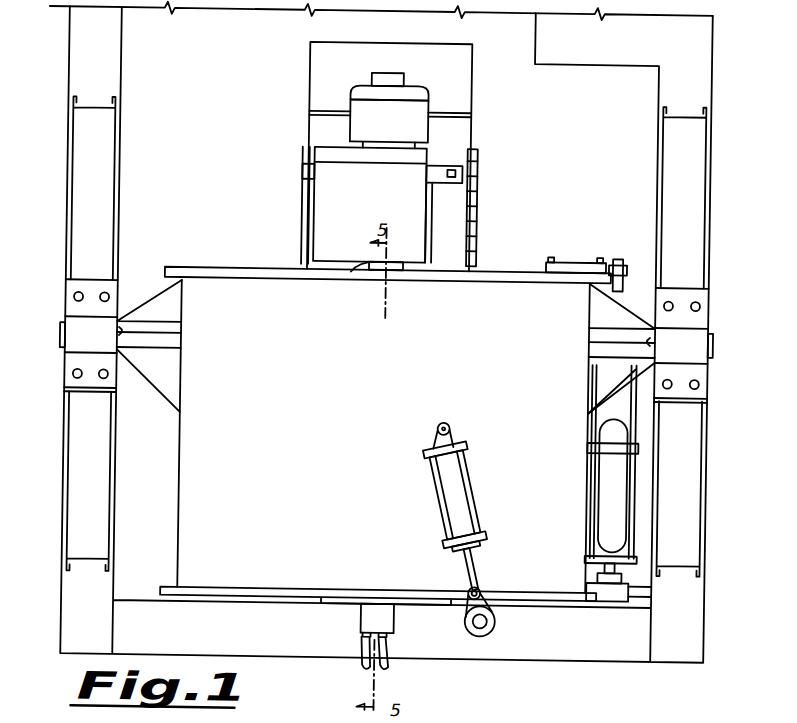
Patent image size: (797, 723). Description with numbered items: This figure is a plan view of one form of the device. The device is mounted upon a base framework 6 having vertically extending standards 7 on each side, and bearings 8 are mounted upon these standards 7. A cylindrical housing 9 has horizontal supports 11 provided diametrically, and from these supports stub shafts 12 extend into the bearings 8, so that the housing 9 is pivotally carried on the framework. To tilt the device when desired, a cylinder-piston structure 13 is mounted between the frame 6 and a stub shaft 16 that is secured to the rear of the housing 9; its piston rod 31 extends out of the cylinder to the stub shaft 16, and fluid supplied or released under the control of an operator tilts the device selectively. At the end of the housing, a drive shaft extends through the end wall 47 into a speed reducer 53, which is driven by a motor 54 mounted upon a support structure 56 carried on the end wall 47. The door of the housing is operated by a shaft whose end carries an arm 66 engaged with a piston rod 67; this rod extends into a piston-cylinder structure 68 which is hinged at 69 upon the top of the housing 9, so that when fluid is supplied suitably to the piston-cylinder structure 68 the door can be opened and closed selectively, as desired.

The base framework 6 is at (718, 200).
The standards 7 is at (710, 263).
The bearings 8 is at (694, 337).
The cylindrical housing 9 is at (205, 491).
The horizontal supports 11 is at (610, 332).
The stub shafts 12 is at (714, 350).
The cylinder-piston structure 13 is at (639, 472).
The stub shaft 16 is at (612, 258).
The piston rod 31 is at (622, 289).
The end wall 47 is at (362, 270).
The speed reducer 53 is at (333, 194).
The motor 54 is at (355, 126).
The support structure 56 is at (485, 160).
The arm 66 is at (490, 593).
The piston rod 67 is at (476, 564).
The piston-cylinder structure 68 is at (465, 499).
The hinge 69 is at (450, 421).